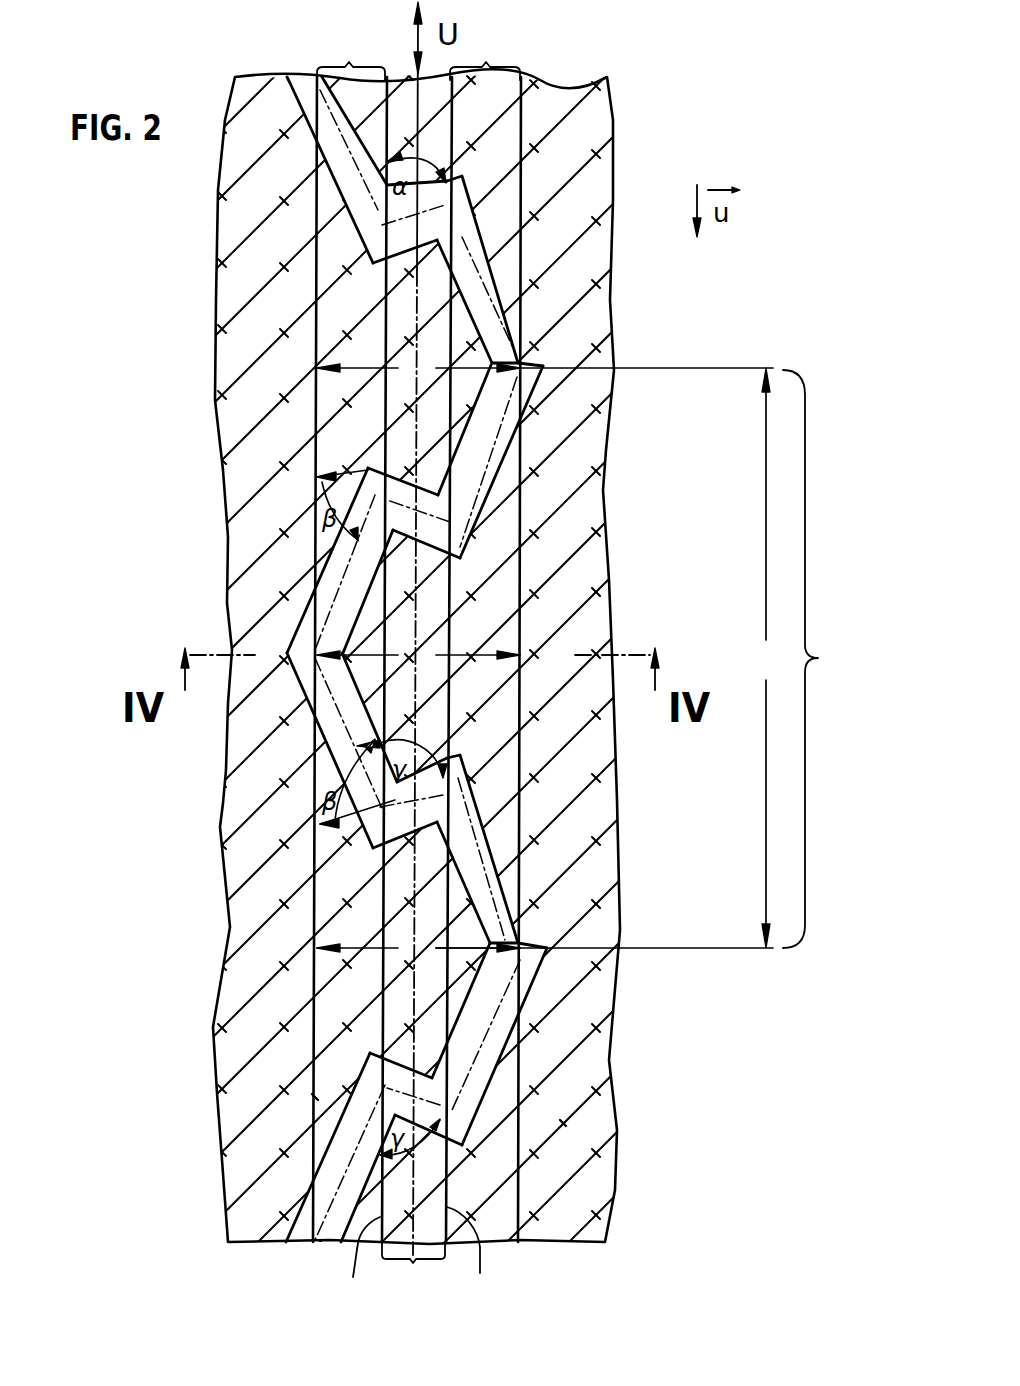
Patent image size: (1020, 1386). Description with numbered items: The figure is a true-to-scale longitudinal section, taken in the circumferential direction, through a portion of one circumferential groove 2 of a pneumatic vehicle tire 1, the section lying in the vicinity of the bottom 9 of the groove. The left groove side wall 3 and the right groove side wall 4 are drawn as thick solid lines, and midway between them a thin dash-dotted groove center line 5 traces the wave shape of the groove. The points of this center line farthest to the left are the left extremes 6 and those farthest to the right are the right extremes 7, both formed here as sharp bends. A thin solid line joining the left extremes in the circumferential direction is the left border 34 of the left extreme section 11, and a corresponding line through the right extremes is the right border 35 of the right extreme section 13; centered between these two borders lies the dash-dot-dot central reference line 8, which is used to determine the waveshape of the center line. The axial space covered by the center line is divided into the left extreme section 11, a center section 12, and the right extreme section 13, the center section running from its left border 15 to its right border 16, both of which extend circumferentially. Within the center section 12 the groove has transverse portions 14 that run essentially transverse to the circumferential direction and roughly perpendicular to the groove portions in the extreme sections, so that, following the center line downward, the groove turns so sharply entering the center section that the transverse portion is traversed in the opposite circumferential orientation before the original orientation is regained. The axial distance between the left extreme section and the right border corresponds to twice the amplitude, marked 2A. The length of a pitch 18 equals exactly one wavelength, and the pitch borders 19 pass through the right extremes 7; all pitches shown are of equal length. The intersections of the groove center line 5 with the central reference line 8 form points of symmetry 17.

The pneumatic vehicle tire 1 is at (560, 1165).
The circumferential groove 2 is at (324, 1243).
The left groove side wall 3 is at (332, 545).
The right groove side wall 4 is at (383, 593).
The groove center line 5 is at (495, 432).
The left extremes 6 is at (313, 715).
The right extremes 7 is at (535, 350).
The central reference line 8 is at (417, 720).
The bottom of the groove 9 is at (505, 1060).
The left extreme section 11 is at (351, 49).
The center section 12 is at (413, 1275).
The right extreme section 13 is at (485, 49).
The transverse portions 14 is at (417, 628).
The left border of the center section 15 is at (361, 1268).
The right border of the center section 16 is at (473, 1258).
The points of symmetry 17 is at (440, 212).
The pitch 18 is at (818, 659).
The pitch borders 19 is at (670, 368).
The twice the amplitude 2A is at (418, 658).
The left border of the left extreme section 34 is at (314, 1096).
The right border of the right extreme section 35 is at (565, 1125).